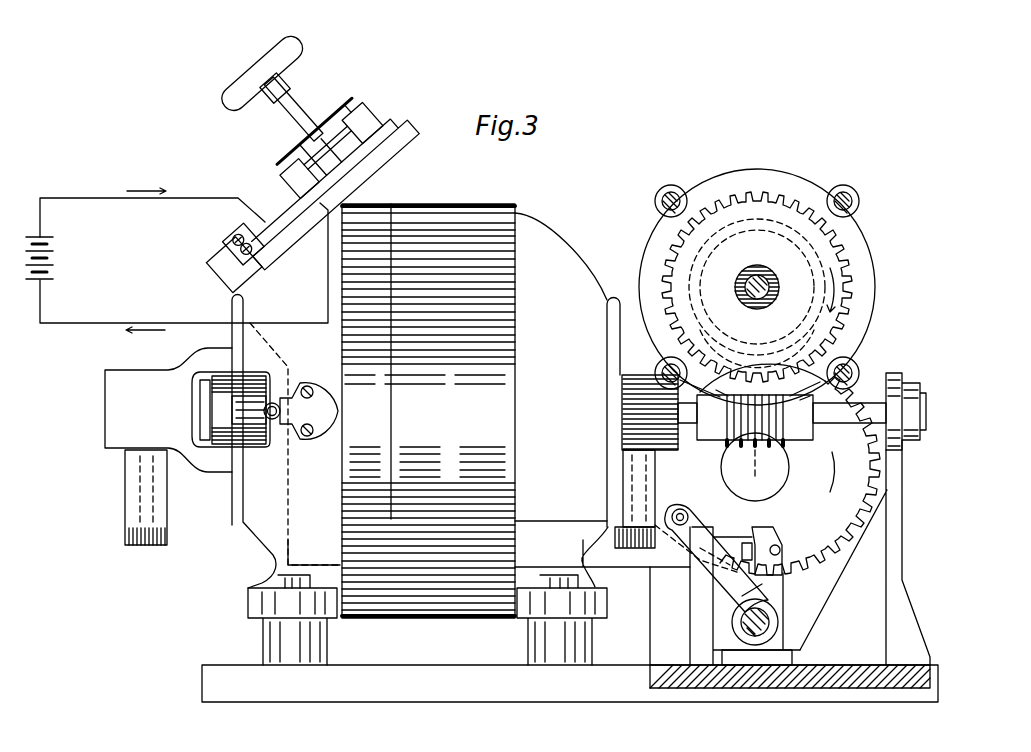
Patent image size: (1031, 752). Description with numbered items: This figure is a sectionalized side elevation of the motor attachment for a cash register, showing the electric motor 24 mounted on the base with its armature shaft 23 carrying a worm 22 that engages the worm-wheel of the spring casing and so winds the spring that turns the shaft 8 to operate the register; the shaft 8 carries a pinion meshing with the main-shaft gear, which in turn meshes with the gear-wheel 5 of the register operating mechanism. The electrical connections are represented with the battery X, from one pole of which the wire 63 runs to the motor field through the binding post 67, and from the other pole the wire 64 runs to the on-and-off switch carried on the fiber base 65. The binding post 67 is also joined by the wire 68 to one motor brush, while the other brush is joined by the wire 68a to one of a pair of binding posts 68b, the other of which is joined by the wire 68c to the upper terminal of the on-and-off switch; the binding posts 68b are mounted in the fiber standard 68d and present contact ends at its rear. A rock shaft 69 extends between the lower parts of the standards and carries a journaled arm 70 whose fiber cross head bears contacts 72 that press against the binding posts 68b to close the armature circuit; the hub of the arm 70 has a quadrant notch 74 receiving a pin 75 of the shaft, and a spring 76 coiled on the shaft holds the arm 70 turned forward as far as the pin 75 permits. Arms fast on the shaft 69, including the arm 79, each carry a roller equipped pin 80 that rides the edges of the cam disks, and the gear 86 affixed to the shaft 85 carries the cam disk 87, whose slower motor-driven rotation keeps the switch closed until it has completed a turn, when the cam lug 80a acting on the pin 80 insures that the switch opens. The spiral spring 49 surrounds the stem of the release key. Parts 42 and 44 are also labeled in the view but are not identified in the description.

The battery X is at (52, 258).
The wire 63 is at (120, 198).
The wire 64 is at (298, 112).
The fiber base 65 is at (332, 190).
The binding post 67 is at (244, 244).
The wire 68 is at (234, 265).
The wire 68a is at (290, 516).
The binding posts 68b is at (697, 562).
The wire 68c is at (540, 520).
The fiber standard 68d is at (698, 647).
The electric motor 24 is at (663, 246).
The gear-wheel 5 is at (757, 186).
The shaft 8 is at (771, 286).
The spiral spring 49 is at (866, 271).
The roller equipped pin 80 is at (728, 341).
The cam lug 80a is at (662, 549).
The worm 22 is at (722, 454).
The armature shaft 23 is at (816, 455).
The shaft 85 is at (776, 469).
The gear 86 is at (882, 468).
The cam disk 87 is at (818, 473).
The frame standard 42 is at (893, 527).
The base plate 44 is at (500, 692).
The arm 79 is at (705, 509).
The rock shaft 69 is at (778, 619).
The contacts 72 is at (751, 527).
The quadrant notch 74 is at (766, 538).
The arm 70 is at (781, 543).
The spring 76 is at (772, 603).
The pin 75 is at (782, 641).